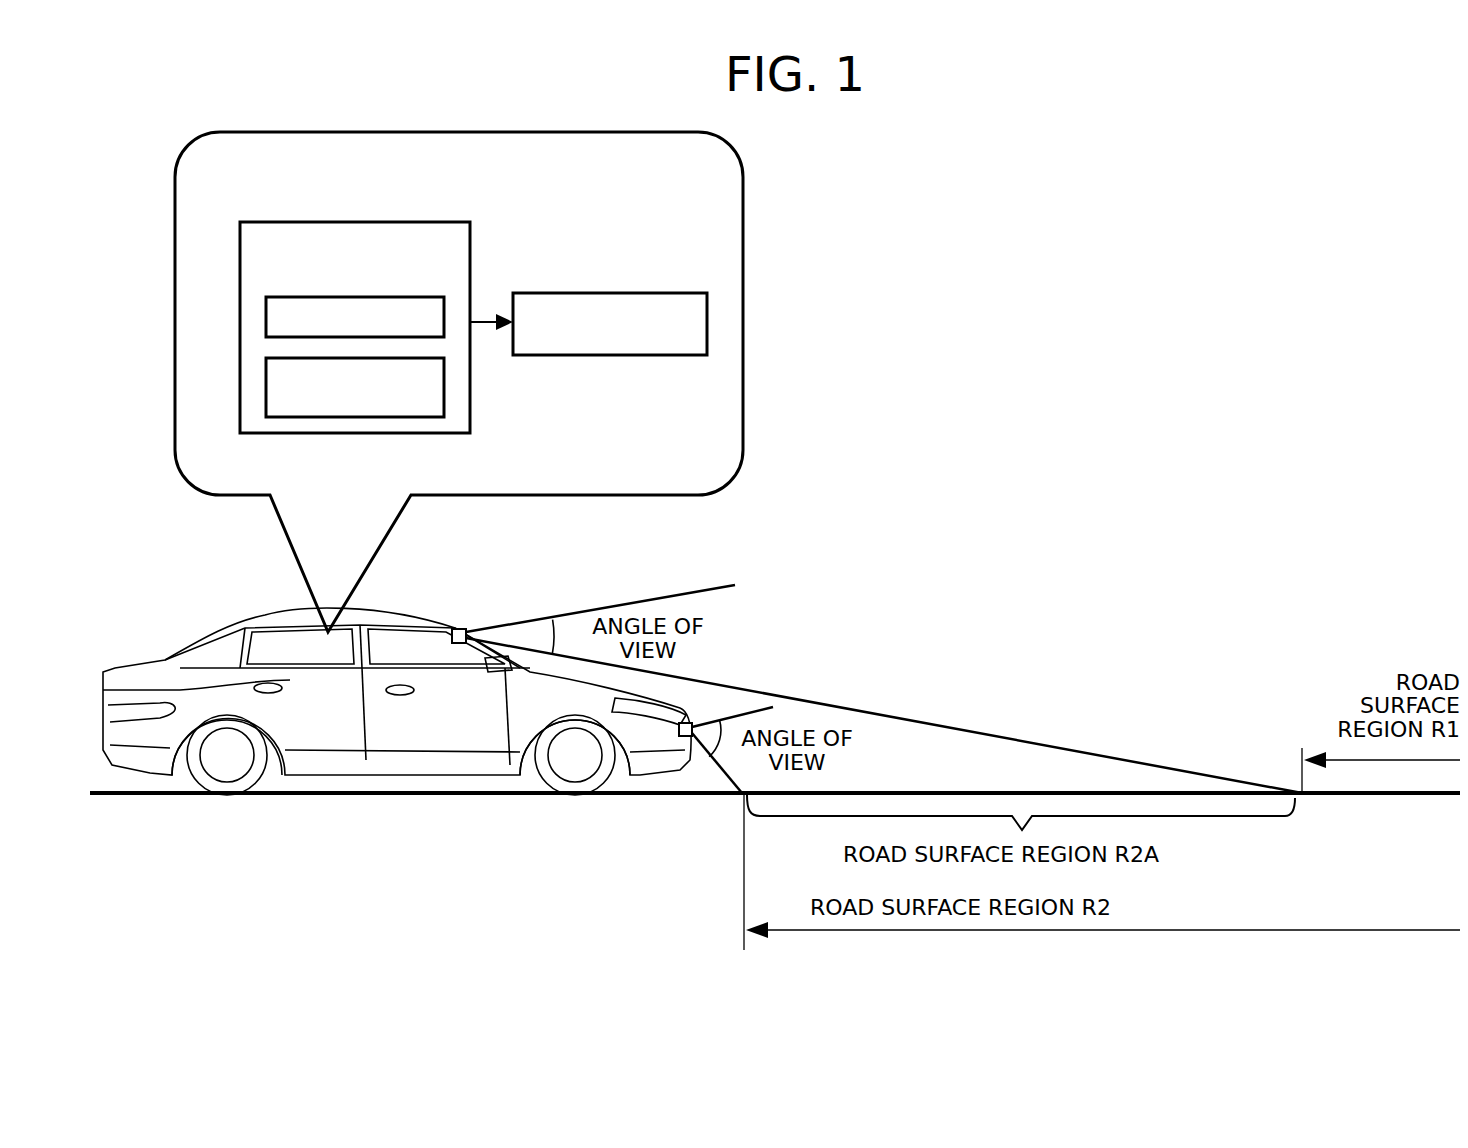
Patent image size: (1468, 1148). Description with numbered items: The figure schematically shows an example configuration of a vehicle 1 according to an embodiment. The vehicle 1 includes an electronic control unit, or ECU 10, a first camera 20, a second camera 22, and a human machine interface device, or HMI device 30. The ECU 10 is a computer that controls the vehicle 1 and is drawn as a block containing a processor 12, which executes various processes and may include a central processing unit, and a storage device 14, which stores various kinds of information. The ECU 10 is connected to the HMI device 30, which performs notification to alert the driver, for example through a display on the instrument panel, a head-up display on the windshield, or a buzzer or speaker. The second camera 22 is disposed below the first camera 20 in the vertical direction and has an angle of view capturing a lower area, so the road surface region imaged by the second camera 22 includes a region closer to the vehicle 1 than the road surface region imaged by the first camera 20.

The vehicle 1 is at (185, 607).
The electronic control unit (ECU) 10 is at (468, 222).
The processor 12 is at (270, 297).
The storage device 14 is at (270, 358).
The first camera 20 is at (457, 628).
The second camera 22 is at (690, 723).
The human machine interface (HMI) device 30 is at (694, 293).